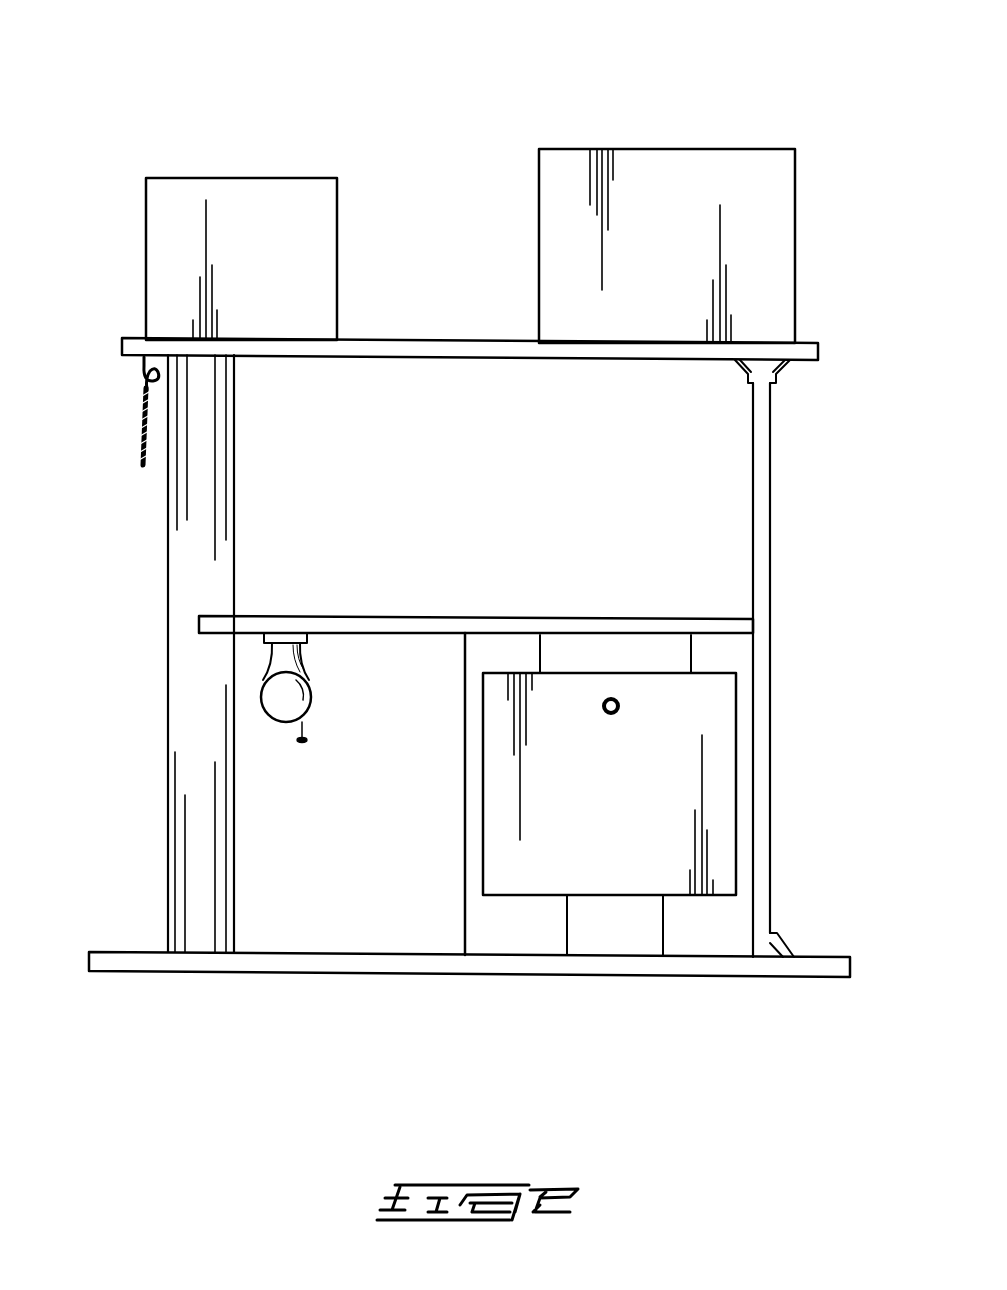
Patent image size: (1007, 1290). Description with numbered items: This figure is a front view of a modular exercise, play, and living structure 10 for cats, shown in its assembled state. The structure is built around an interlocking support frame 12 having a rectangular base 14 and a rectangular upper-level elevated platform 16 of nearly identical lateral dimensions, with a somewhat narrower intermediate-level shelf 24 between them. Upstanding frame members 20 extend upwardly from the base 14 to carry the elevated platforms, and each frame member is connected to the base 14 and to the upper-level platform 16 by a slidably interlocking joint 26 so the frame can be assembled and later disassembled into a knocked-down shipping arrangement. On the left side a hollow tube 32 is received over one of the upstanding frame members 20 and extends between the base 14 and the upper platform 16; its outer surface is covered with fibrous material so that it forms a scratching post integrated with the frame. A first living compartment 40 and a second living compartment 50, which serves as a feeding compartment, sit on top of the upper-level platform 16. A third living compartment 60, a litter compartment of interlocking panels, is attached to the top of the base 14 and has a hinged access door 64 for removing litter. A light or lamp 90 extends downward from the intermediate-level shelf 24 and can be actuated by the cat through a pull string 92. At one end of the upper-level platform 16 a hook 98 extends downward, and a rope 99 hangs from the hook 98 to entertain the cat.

The modular structure 10 is at (430, 143).
The support frame 12 is at (144, 653).
The base 14 is at (130, 955).
The upper-level elevated platform 16 is at (812, 355).
The upstanding frame members 20 is at (814, 658).
The intermediate-level platform or shelf 24 is at (480, 618).
The slidably interlocking joint 26 is at (790, 375).
The hollow tube 32 is at (180, 690).
The first living compartment 40 is at (660, 168).
The second living compartment 50 is at (247, 197).
The third living compartment 60 is at (664, 794).
The hinged access door 64 is at (724, 812).
The light or lamp 90 is at (312, 722).
The pull string 92 is at (302, 742).
The hook 98 is at (140, 368).
The rope 99 is at (138, 420).